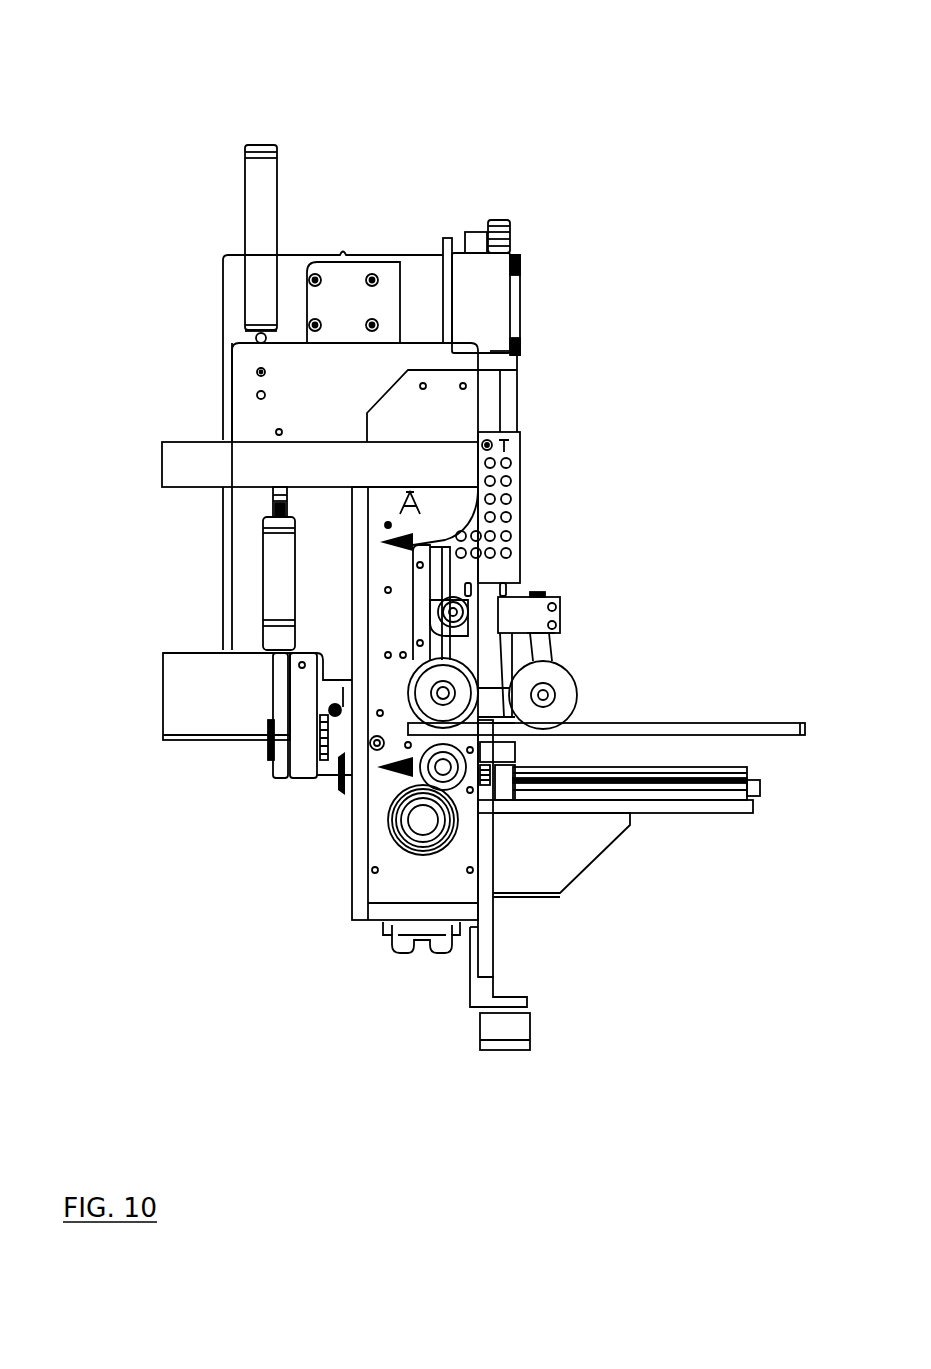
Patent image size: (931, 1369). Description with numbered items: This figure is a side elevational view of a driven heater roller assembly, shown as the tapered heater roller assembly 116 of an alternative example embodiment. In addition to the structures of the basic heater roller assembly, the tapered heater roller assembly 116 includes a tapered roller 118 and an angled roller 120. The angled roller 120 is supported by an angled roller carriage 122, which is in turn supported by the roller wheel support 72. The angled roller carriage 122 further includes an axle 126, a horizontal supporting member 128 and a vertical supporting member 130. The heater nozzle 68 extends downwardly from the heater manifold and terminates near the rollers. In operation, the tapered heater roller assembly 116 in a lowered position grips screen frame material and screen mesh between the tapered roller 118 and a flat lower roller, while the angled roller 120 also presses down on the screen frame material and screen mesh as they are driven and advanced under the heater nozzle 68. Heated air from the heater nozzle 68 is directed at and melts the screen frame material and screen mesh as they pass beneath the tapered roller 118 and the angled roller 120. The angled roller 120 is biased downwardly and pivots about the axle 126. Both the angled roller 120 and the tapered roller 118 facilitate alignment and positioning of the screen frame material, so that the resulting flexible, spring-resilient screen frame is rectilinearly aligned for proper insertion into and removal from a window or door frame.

The tapered heater roller assembly 116 is at (341, 200).
The roller wheel support 72 is at (437, 513).
The tapered roller 118 is at (267, 647).
The angled roller carriage 122 is at (505, 602).
The axle 126 is at (440, 605).
The heater nozzle 68 is at (488, 647).
The angled roller 120 is at (437, 727).
The horizontal supporting member 128 is at (532, 618).
The vertical supporting member 130 is at (553, 655).